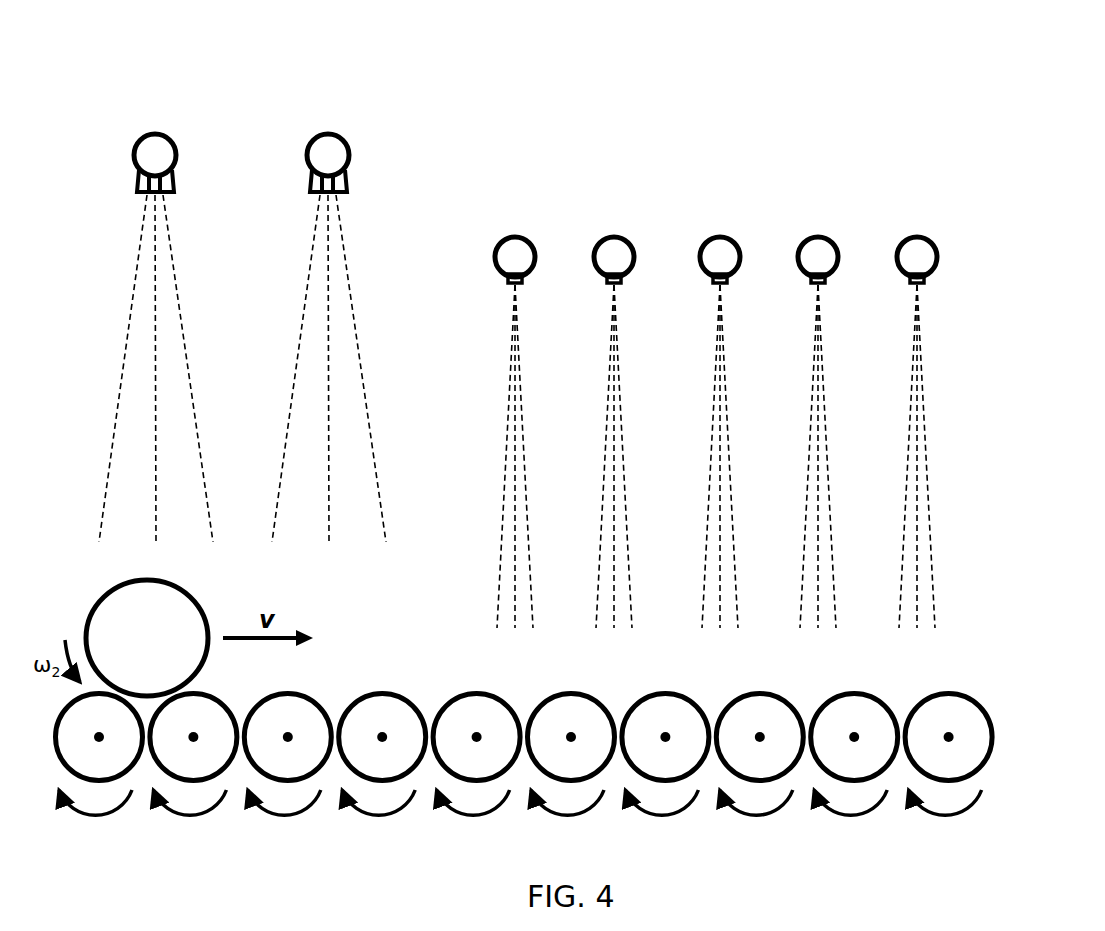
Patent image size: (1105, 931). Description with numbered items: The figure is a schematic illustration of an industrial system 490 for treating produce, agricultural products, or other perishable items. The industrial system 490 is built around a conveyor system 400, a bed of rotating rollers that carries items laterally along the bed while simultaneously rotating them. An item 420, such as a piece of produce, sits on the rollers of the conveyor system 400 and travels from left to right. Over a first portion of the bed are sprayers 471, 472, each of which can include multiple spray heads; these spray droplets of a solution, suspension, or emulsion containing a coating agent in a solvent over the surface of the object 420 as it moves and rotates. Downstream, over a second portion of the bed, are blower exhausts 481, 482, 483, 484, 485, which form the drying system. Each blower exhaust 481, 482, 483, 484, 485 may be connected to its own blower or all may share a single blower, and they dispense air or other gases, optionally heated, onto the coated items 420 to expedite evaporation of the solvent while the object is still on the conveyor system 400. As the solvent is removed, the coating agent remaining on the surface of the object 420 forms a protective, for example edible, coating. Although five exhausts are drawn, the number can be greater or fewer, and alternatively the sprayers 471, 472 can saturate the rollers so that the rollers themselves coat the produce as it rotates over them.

The conveyor system 400 is at (1025, 675).
The items 420 is at (108, 608).
The sprayer 471 is at (152, 150).
The sprayer 472 is at (325, 150).
The blower exhaust 481 is at (511, 250).
The blower exhaust 482 is at (610, 250).
The blower exhaust 483 is at (716, 250).
The blower exhaust 484 is at (814, 250).
The blower exhaust 485 is at (913, 250).
The industrial system 490 is at (610, 132).